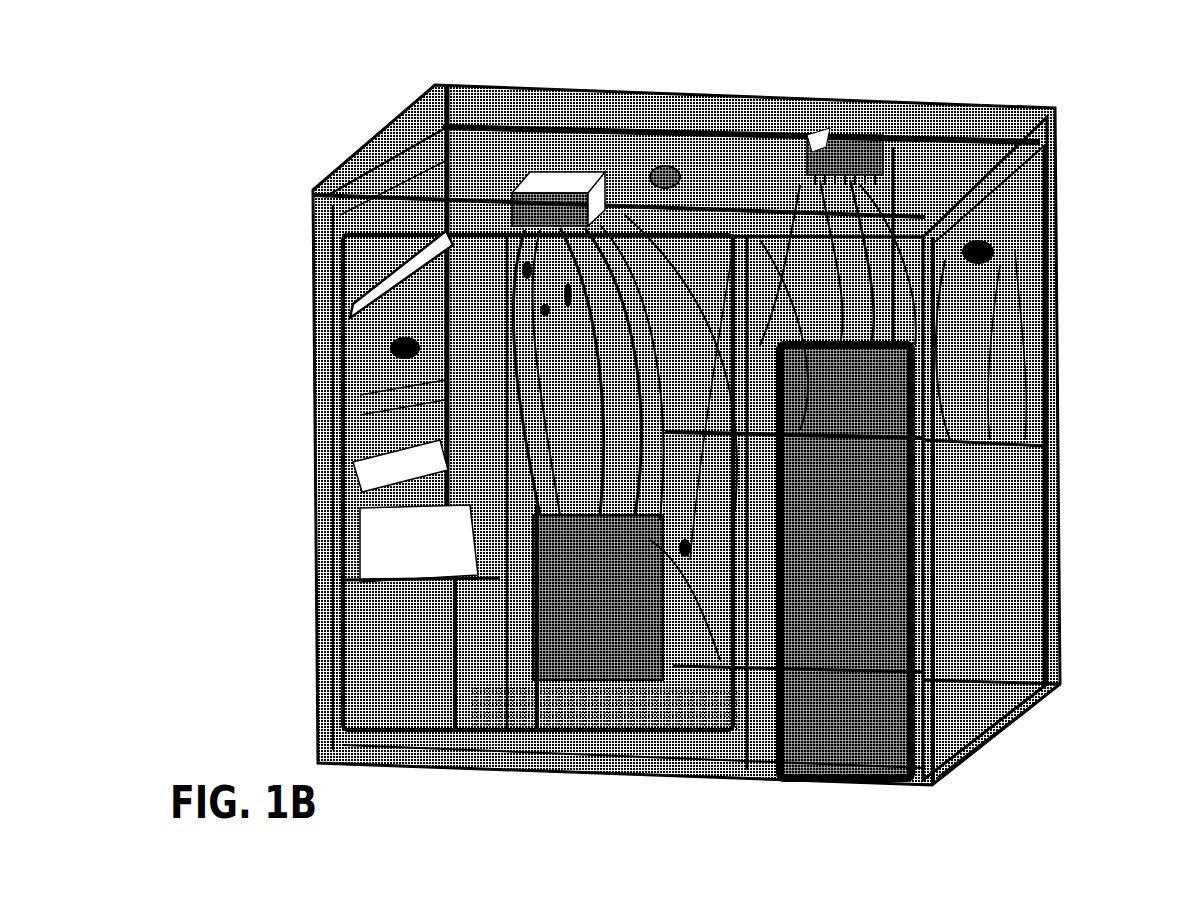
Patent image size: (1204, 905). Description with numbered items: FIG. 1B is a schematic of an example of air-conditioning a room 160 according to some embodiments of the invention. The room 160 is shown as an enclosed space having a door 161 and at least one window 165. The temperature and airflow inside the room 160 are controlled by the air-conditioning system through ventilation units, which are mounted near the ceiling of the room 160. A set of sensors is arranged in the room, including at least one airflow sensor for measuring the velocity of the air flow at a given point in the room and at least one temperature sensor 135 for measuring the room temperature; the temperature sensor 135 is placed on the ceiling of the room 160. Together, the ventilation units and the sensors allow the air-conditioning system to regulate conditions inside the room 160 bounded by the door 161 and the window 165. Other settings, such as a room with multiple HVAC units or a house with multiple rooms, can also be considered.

The temperature sensor 135 is at (663, 167).
The room 160 is at (313, 483).
The door 161 is at (887, 533).
The window 165 is at (1025, 277).